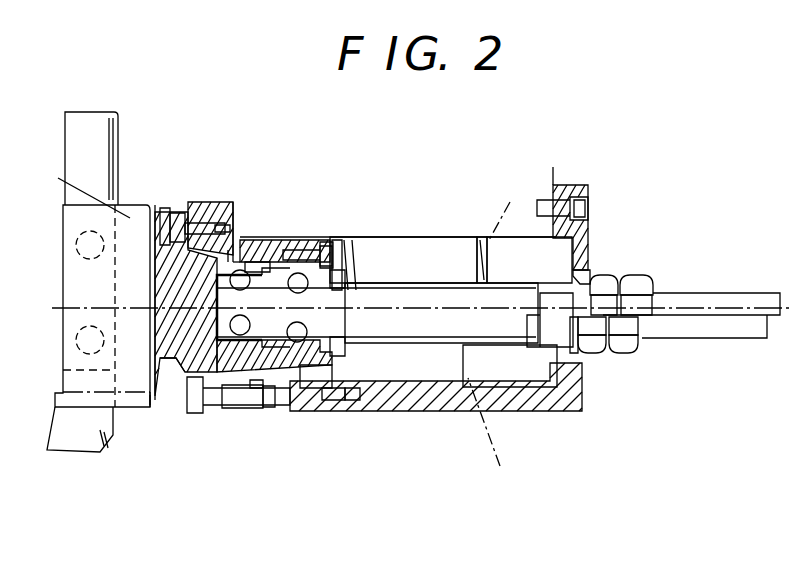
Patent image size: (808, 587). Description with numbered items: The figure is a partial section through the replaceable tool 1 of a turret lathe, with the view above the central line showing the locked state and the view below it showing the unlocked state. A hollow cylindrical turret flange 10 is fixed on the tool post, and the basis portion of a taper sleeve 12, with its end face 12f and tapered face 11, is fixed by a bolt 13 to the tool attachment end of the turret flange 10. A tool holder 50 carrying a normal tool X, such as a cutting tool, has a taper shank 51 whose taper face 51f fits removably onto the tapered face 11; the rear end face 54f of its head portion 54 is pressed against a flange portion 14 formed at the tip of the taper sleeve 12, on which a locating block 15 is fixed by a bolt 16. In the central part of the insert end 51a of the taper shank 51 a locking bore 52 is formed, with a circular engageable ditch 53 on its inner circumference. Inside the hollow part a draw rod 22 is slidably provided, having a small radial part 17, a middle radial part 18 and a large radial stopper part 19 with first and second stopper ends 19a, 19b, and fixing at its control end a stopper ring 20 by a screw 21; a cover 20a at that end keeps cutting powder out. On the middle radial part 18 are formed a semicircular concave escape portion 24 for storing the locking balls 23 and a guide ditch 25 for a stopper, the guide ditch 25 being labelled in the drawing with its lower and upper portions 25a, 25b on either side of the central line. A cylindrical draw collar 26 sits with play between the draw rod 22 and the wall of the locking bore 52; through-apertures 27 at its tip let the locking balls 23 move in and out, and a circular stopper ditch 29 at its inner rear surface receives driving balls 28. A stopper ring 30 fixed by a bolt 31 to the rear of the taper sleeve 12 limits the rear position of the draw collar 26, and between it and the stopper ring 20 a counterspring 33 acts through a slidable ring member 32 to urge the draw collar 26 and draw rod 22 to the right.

The tool holder assembly 1 is at (432, 164).
The turret flange 10 is at (437, 411).
The tapered face 11 is at (184, 390).
The taper sleeve 12 is at (238, 255).
The end face 12f is at (183, 380).
The bolt 13 is at (203, 395).
The flange portion 14 is at (210, 215).
The block 15 is at (183, 225).
The bolt 16 is at (165, 222).
The small radial part 17 is at (250, 398).
The middle radial part 18 is at (358, 398).
The large radial part 19 is at (517, 332).
The first stopper end 19a is at (610, 266).
The second stopper end 19b is at (403, 259).
The stopper ring 20 is at (578, 277).
The cover 20a is at (584, 242).
The screw 21 is at (574, 325).
The draw rod 22 is at (437, 279).
The locking balls 23 is at (252, 262).
The circular concave portion 24 is at (272, 262).
The guide ditch 25 is at (340, 303).
The spindle lower part 25a is at (335, 320).
The spindle upper part 25b is at (339, 275).
The draw collar 26 is at (296, 388).
The through-aperture 27 is at (228, 279).
The driving balls 28 is at (338, 272).
The circular stopper ditch 29 is at (300, 262).
The stopper ring 30 is at (322, 262).
The bolt 31 is at (352, 275).
The ring member 32 is at (517, 247).
The counterspring 33 is at (517, 334).
The tool holder 50 is at (128, 196).
The taper shank 51 is at (236, 250).
The insert end 51a is at (260, 382).
The taper face 51f is at (240, 248).
The locking bore 52 is at (168, 392).
The engageable ditch 53 is at (242, 236).
The head portion 54 is at (81, 184).
The end face 54f is at (173, 395).
The tool X is at (93, 448).